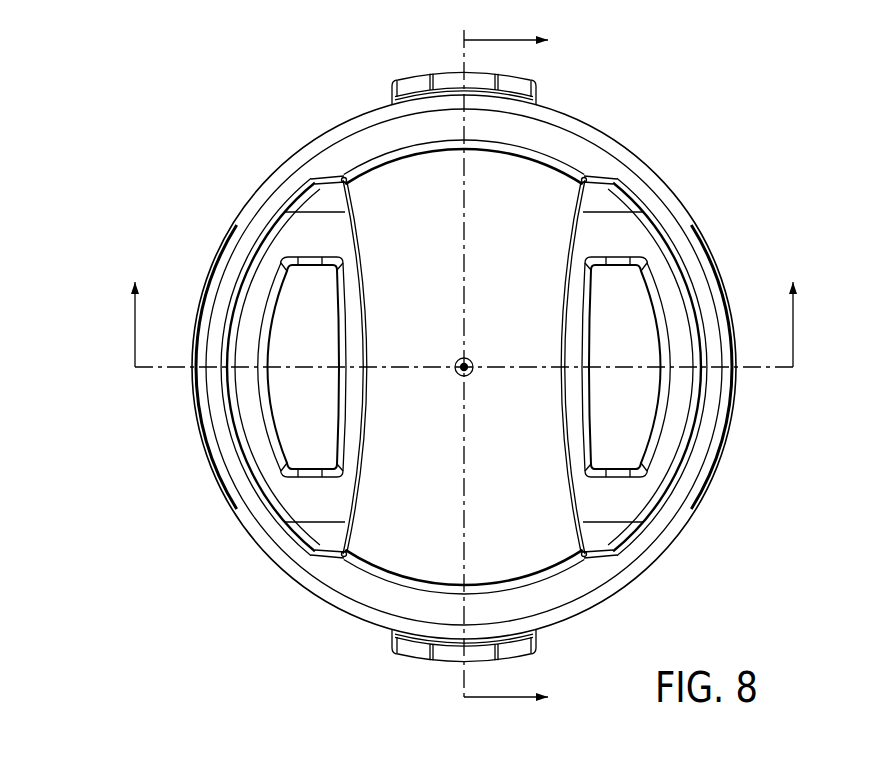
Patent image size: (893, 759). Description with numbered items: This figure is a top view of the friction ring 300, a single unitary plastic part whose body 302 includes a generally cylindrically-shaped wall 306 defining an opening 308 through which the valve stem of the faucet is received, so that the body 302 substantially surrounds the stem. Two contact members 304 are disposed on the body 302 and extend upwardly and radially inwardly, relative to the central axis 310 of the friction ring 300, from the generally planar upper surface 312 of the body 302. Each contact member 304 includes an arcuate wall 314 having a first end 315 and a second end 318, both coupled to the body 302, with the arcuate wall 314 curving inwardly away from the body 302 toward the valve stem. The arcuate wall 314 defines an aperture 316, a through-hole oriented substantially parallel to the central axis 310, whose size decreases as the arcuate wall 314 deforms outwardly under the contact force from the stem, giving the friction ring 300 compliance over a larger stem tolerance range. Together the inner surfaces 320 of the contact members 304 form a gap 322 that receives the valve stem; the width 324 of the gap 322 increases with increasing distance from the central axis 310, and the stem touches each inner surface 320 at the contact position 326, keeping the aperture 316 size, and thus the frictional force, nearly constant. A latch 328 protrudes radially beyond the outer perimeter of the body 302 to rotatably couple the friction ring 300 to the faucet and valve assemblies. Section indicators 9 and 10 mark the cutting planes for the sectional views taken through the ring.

The friction ring 300 is at (190, 93).
The body 302 is at (636, 160).
The contact members 304 is at (262, 296).
The wall 306 is at (678, 217).
The opening 308 is at (525, 527).
The central axis 310 is at (471, 360).
The upper surface 312 is at (550, 138).
The arcuate wall 314 is at (372, 395).
The first end 315 is at (342, 570).
The aperture 316 is at (632, 403).
The second end 318 is at (341, 170).
The inner surface 320 is at (356, 500).
The gap 322 is at (416, 473).
The width 324 is at (477, 380).
The contact position 326 is at (372, 356).
The latch 328 is at (412, 67).
The section line 9- 9 is at (519, 369).
The section line 10- 10 is at (462, 323).